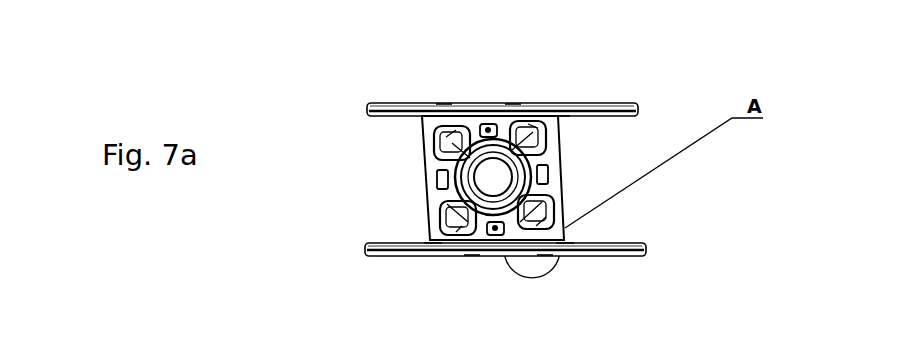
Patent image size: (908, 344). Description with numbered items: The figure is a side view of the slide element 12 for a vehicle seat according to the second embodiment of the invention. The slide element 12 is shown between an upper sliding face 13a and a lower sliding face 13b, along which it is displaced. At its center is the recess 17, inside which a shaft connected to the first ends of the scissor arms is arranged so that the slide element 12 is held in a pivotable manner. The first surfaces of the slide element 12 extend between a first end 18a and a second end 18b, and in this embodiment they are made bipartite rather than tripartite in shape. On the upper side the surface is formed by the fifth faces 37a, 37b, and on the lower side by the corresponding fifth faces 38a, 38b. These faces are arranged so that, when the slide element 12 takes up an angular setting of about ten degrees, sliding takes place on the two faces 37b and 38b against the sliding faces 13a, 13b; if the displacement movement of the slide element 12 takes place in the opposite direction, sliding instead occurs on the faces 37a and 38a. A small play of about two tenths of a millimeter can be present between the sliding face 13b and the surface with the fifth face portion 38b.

The slide element 12 is at (560, 147).
The recess 17 is at (437, 182).
The sliding face 13a is at (610, 117).
The sliding face 13b is at (403, 240).
The first end of the first surface 18a is at (437, 120).
The second end of the first surface 18b is at (568, 113).
The fifth face 37a is at (443, 102).
The fifth face 37b is at (513, 100).
The fifth face 38a is at (545, 255).
The fifth face 38b is at (472, 240).